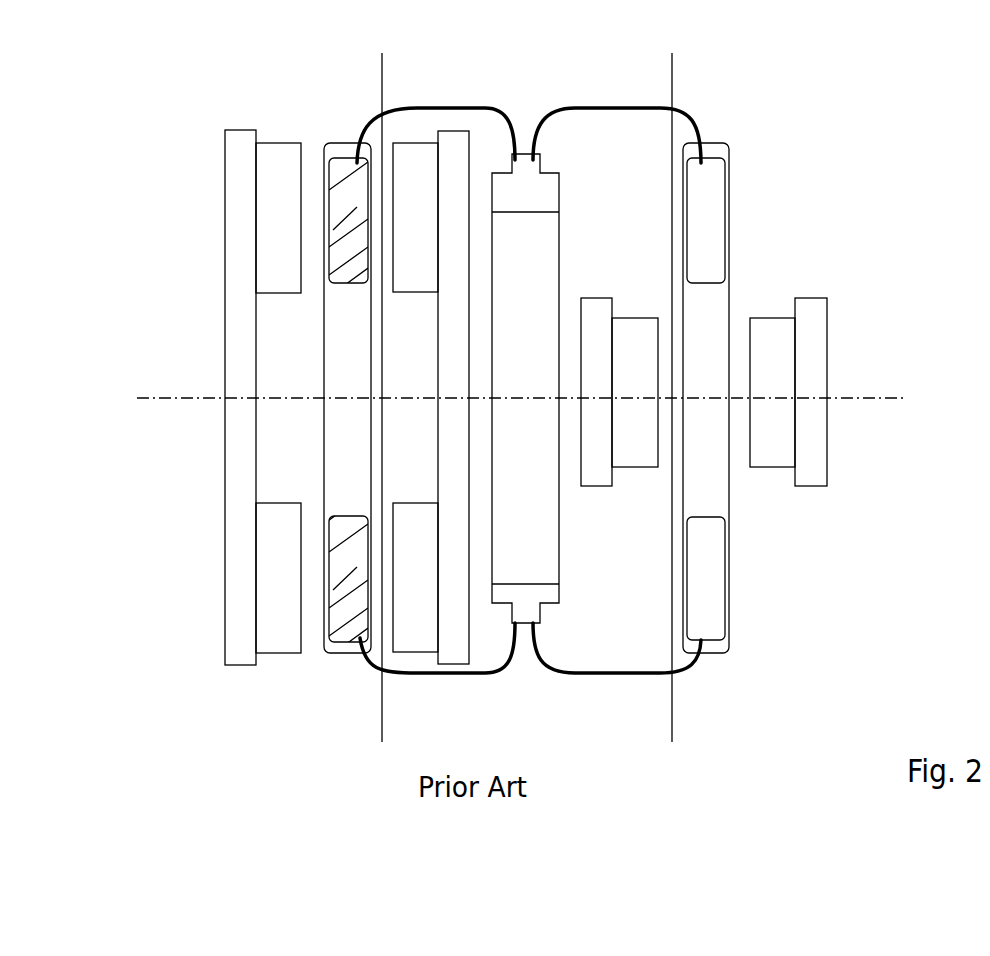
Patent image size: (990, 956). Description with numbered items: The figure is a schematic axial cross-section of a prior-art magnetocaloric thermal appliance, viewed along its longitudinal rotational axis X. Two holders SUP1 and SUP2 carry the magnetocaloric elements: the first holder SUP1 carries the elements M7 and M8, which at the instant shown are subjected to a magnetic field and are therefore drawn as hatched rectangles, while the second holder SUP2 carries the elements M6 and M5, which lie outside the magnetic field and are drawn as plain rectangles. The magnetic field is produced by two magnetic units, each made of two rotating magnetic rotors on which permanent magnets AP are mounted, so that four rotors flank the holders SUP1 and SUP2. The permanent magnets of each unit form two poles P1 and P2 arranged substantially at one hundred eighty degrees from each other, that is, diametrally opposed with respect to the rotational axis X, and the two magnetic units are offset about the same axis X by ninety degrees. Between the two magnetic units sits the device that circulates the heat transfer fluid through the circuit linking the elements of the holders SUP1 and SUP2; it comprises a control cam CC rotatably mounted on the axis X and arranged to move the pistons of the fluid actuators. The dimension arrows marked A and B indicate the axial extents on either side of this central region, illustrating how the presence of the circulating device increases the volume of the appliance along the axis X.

The rotational axis X is at (881, 413).
The pole P1 is at (310, 116).
The pole P2 is at (326, 670).
The permanent magnets AP is at (263, 170).
The holder SUP1 is at (353, 155).
The holder SUP2 is at (713, 160).
The magnetocaloric element M5 is at (702, 570).
The magnetocaloric element M6 is at (703, 203).
The magnetocaloric element M7 is at (357, 207).
The magnetocaloric element M8 is at (352, 578).
The control cam CC is at (522, 168).
The section A is at (432, 73).
The section B is at (672, 73).